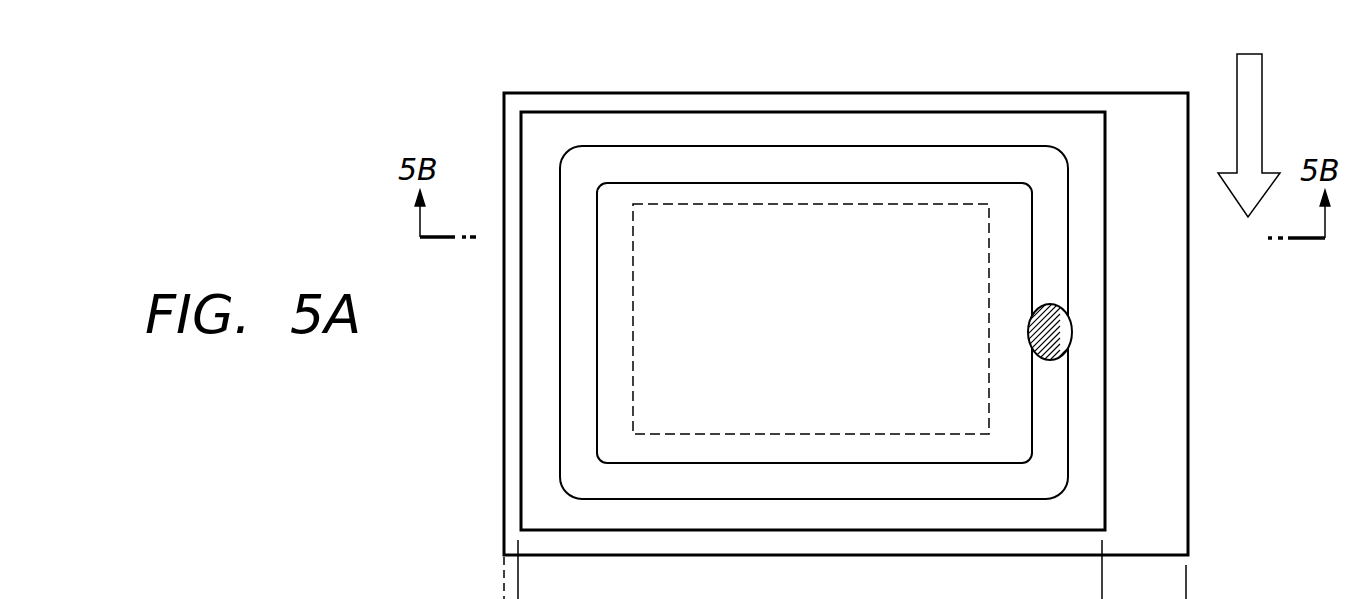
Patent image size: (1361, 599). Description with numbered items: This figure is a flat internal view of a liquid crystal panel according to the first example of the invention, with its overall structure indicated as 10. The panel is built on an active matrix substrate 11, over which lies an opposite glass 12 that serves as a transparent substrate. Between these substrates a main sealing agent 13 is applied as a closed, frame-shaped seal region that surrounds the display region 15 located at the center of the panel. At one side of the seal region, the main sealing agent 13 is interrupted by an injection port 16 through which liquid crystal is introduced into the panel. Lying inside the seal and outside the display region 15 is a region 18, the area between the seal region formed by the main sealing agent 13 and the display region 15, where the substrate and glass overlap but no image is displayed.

The semiconductor device 10 is at (782, 450).
The active matrix substrate 11 is at (1188, 390).
The opposite glass 12 is at (1105, 487).
The main sealing agent 13 is at (668, 485).
The display region 15 is at (866, 210).
The injection port 16 is at (1070, 332).
The region between seal region and display region 18 is at (742, 192).